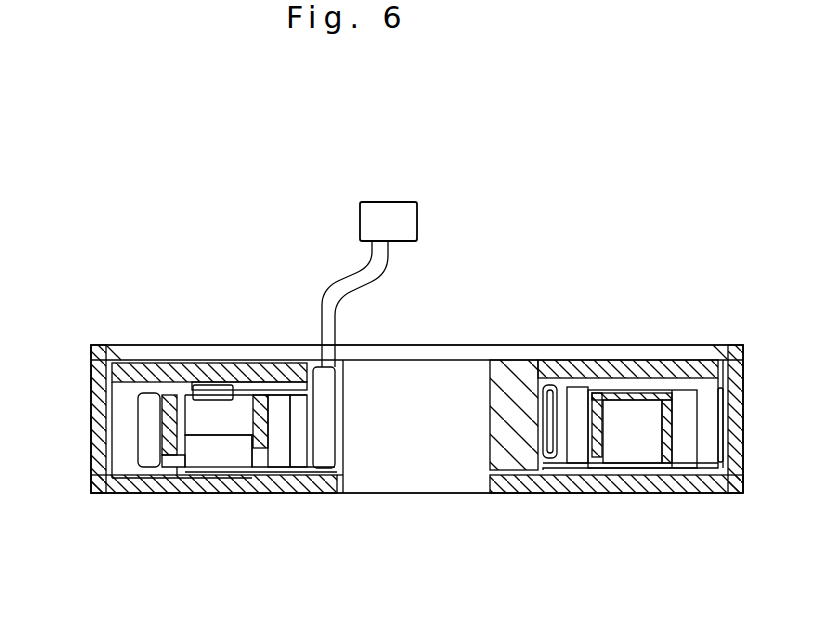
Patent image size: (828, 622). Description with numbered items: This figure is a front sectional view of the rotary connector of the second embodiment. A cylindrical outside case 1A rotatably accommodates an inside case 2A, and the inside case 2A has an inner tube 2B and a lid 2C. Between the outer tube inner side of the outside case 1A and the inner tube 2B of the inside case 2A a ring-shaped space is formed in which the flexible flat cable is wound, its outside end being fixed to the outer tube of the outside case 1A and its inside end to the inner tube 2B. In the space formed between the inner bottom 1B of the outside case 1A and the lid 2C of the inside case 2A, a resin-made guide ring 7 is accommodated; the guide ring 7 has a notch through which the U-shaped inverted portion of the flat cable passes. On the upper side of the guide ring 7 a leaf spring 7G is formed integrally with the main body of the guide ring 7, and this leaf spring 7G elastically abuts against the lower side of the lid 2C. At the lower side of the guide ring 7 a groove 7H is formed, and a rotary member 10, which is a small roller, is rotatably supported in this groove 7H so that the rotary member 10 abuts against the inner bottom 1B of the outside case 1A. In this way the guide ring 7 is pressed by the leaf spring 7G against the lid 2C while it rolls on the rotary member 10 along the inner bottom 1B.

The outside case 1A is at (87, 460).
The inner bottom of the outside case 1B is at (212, 487).
The inside case 2A is at (510, 372).
The inner tube 2B is at (353, 380).
The lid 2C is at (282, 370).
The guide ring 7 is at (150, 400).
The leaf spring 7G is at (207, 392).
The groove 7H is at (167, 462).
The rotary member 10 is at (237, 463).